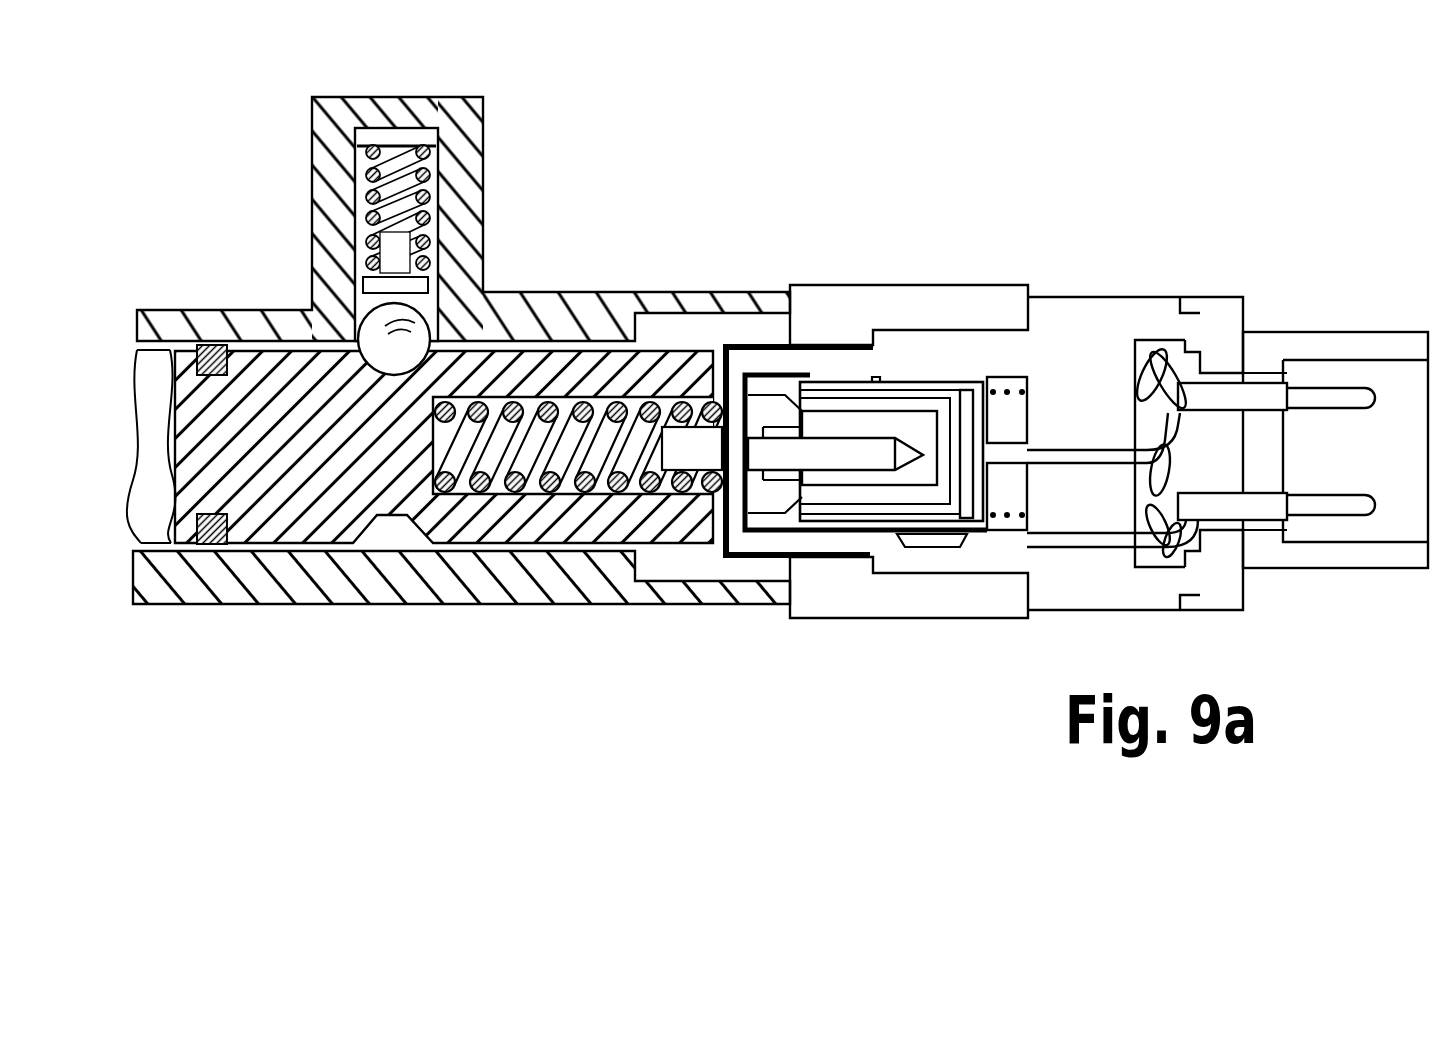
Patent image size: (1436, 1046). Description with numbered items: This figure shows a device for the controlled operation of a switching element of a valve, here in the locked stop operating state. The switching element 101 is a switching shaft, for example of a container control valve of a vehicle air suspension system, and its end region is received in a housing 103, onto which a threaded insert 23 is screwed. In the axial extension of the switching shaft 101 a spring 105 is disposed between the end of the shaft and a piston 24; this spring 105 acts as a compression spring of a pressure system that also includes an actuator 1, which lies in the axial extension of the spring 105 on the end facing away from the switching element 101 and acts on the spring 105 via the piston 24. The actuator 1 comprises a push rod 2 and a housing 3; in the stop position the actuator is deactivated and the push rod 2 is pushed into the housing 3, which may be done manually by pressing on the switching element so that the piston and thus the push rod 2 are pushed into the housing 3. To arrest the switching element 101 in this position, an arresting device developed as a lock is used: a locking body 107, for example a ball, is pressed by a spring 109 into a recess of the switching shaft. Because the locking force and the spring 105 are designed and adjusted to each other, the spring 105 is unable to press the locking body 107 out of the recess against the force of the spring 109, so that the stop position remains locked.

The actuator 1 is at (838, 508).
The push rod 2 is at (770, 455).
The housing 3 is at (892, 413).
The threaded insert 23 is at (967, 298).
The piston 24 is at (733, 365).
The switching element 101 is at (572, 515).
The housing 103 is at (372, 590).
The spring 105 is at (623, 458).
The locking body 107 is at (397, 345).
The spring 109 is at (405, 187).